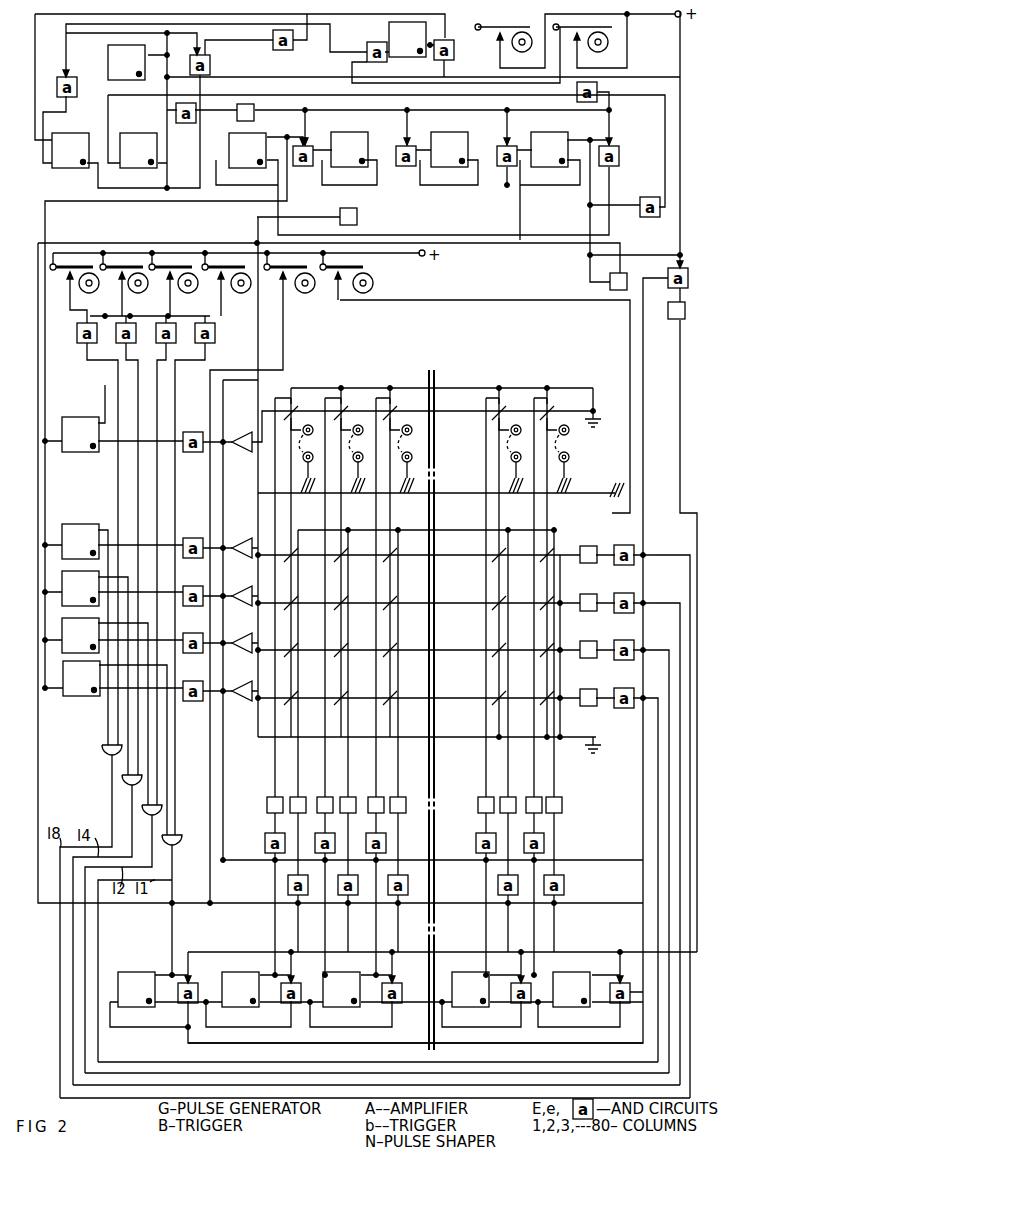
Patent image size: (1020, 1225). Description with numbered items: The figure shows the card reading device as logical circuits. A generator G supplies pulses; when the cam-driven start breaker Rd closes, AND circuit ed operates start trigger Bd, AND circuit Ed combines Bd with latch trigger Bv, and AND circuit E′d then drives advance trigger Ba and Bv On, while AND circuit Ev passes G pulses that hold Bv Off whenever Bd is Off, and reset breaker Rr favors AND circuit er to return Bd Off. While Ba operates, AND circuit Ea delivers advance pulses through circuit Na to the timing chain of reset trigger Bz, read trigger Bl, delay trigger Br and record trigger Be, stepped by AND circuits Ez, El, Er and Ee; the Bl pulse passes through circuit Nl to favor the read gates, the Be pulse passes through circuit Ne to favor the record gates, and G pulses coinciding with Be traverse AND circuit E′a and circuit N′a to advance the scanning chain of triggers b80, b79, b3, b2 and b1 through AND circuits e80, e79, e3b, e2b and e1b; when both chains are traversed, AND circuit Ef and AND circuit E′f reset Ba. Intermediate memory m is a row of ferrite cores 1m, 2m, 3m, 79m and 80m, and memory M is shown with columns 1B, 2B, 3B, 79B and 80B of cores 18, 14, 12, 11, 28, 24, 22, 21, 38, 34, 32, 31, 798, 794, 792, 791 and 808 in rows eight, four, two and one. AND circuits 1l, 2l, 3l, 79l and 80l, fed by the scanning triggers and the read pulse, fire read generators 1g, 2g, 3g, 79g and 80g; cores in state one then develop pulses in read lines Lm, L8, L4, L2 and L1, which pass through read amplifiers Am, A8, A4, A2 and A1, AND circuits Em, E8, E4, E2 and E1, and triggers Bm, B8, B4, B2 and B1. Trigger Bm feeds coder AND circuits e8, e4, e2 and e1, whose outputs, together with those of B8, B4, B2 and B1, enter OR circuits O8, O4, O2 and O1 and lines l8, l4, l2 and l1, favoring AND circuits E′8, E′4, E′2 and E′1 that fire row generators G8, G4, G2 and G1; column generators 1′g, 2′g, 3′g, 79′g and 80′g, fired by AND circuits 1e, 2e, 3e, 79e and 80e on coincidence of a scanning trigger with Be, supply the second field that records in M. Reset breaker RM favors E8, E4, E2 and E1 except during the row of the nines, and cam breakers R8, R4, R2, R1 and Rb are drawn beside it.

The pulse generator G is at (126, 62).
The trigger Bv is at (70, 150).
The trigger Ba is at (138, 150).
The trigger Bz is at (247, 150).
The trigger Bl is at (349, 149).
The trigger Br is at (449, 149).
The trigger Be is at (549, 149).
The trigger Bd is at (407, 39).
The AND circuit Ev is at (76, 88).
The AND circuit E'd E′d is at (210, 65).
The AND circuit Ed is at (275, 33).
The AND circuit Ea is at (183, 123).
The pulse shaper Na is at (237, 115).
The AND circuit Ez is at (309, 146).
The AND circuit er is at (377, 59).
The AND circuit ed is at (441, 58).
The AND circuit El is at (412, 146).
The AND circuit Er is at (513, 146).
The AND circuit Ee is at (620, 145).
The AND circuit E'f E′f is at (597, 95).
The AND circuit Ef is at (650, 218).
The pulse shaper Ne is at (610, 283).
The AND circuit E'a E′a is at (668, 282).
The pulse shaper N'a N′a is at (672, 319).
The pulse shaper Nl is at (357, 217).
The relay Rd is at (530, 38).
The relay Rr is at (606, 46).
The relay R8 is at (97, 290).
The relay R4 is at (146, 290).
The relay R2 is at (196, 290).
The relay R1 is at (249, 290).
The relay RM is at (313, 290).
The relay Rb is at (371, 279).
The AND circuit e8 is at (77, 337).
The AND circuit e4 is at (134, 339).
The AND circuit e2 is at (174, 339).
The AND circuit e1 is at (214, 339).
The trigger Bm is at (80, 434).
The trigger B8 is at (80, 541).
The trigger B4 is at (80, 588).
The trigger B2 is at (80, 635).
The trigger B1 is at (81, 678).
The AND circuit Em is at (194, 432).
The AND circuit E8 is at (197, 528).
The AND circuit E4 is at (197, 576).
The AND circuit E2 is at (197, 623).
The AND circuit E1 is at (197, 671).
The amplifier Am is at (240, 430).
The amplifier A8 is at (240, 538).
The amplifier A4 is at (240, 586).
The amplifier A2 is at (240, 633).
The amplifier A1 is at (240, 681).
The line Lm is at (462, 411).
The line L8 is at (472, 555).
The line L4 is at (472, 603).
The line L2 is at (472, 650).
The line L1 is at (472, 698).
The column 1 mark brush 1m is at (295, 583).
The column 2 mark brush 2m is at (345, 583).
The column 3 mark brush 3m is at (395, 583).
The column 79 mark brush 79m is at (502, 583).
The column 80 mark brush 80m is at (550, 583).
The column 1 bus 1B is at (303, 518).
The column 2 bus 2B is at (353, 518).
The column 3 bus 3B is at (403, 518).
The column 79 bus 79B is at (510, 518).
The column 80 bus 80B is at (562, 518).
The contact 18 is at (299, 548).
The contact 14 is at (299, 596).
The contact 12 is at (299, 643).
The contact 11 is at (299, 691).
The contact 28 is at (349, 548).
The contact 24 is at (349, 596).
The contact 22 is at (349, 643).
The contact 21 is at (349, 691).
The contact 38 is at (398, 548).
The contact 34 is at (398, 596).
The contact 32 is at (398, 643).
The contact 31 is at (398, 691).
The contact 798 is at (512, 548).
The contact 794 is at (512, 596).
The contact 792 is at (512, 643).
The contact 791 is at (512, 691).
The contact 808 is at (552, 548).
The gate G8 is at (588, 563).
The gate G4 is at (588, 611).
The gate G2 is at (588, 658).
The gate G1 is at (588, 706).
The AND circuit E'8 E′8 is at (622, 566).
The AND circuit E'4 E′4 is at (622, 614).
The AND circuit E'2 E′2 is at (622, 661).
The AND circuit E'1 E′1 is at (622, 709).
The line l8 is at (655, 550).
The line l4 is at (650, 598).
The line l2 is at (645, 645).
The line l1 is at (652, 698).
The OR circuit O8 is at (102, 748).
The OR circuit O4 is at (122, 778).
The OR circuit O2 is at (162, 807).
The OR circuit O1 is at (190, 845).
The gate 1g is at (267, 805).
The gate 1'g 1′g is at (290, 800).
The gate 2g is at (320, 797).
The gate 2'g 2′g is at (350, 797).
The gate 3g is at (380, 797).
The gate 3'g 3′g is at (409, 807).
The gate 79g is at (478, 805).
The gate 79'g 79′g is at (500, 800).
The gate 80g is at (542, 797).
The gate 80'g 80′g is at (572, 807).
The AND circuit 1l is at (264, 841).
The AND circuit 2l is at (315, 841).
The AND circuit 3l is at (366, 841).
The AND circuit 79l is at (469, 841).
The AND circuit 80l is at (549, 841).
The AND circuit 1e is at (306, 883).
The AND circuit 2e is at (356, 883).
The AND circuit 3e is at (406, 883).
The AND circuit 79e is at (498, 885).
The AND circuit 80e is at (572, 882).
The trigger b1 is at (136, 989).
The trigger b2 is at (240, 989).
The trigger b3 is at (341, 989).
The trigger b79 is at (470, 989).
The trigger b80 is at (571, 989).
The AND circuit e1 (column 1) e1b is at (196, 985).
The AND circuit e2 (column 2) e2b is at (299, 985).
The AND circuit e3 (column 3) e3b is at (400, 985).
The AND circuit e79 is at (529, 985).
The AND circuit e80 is at (628, 985).